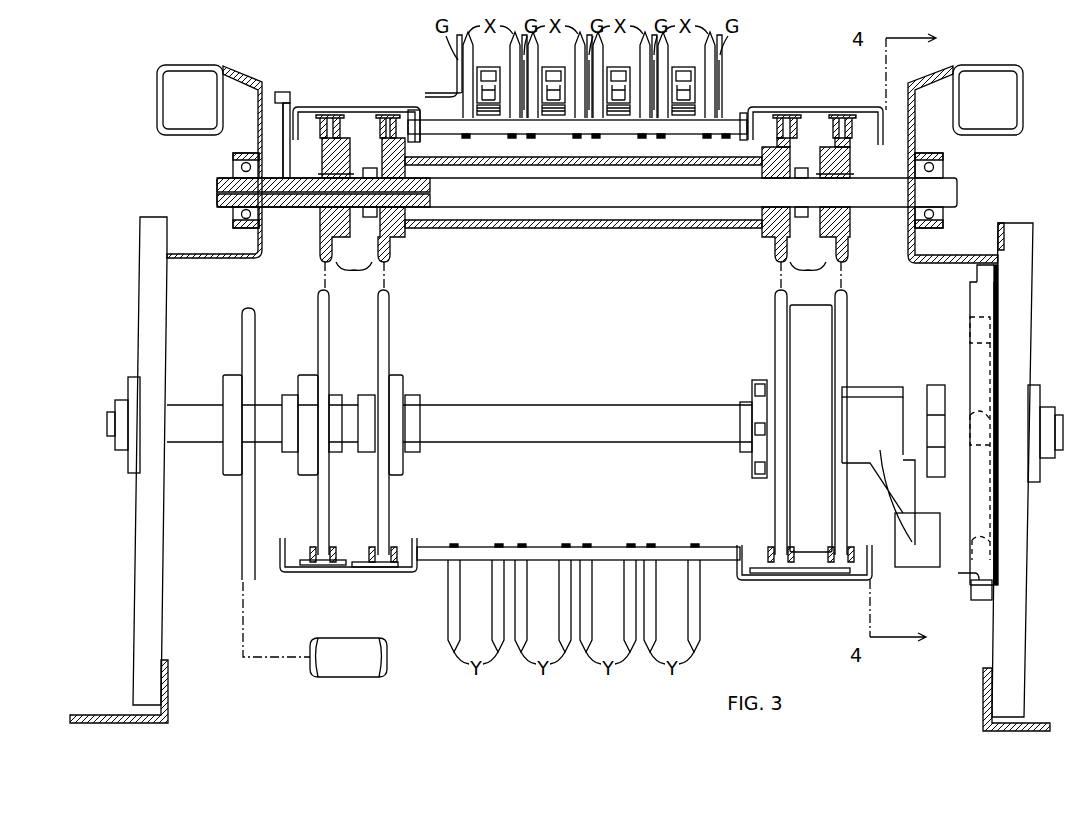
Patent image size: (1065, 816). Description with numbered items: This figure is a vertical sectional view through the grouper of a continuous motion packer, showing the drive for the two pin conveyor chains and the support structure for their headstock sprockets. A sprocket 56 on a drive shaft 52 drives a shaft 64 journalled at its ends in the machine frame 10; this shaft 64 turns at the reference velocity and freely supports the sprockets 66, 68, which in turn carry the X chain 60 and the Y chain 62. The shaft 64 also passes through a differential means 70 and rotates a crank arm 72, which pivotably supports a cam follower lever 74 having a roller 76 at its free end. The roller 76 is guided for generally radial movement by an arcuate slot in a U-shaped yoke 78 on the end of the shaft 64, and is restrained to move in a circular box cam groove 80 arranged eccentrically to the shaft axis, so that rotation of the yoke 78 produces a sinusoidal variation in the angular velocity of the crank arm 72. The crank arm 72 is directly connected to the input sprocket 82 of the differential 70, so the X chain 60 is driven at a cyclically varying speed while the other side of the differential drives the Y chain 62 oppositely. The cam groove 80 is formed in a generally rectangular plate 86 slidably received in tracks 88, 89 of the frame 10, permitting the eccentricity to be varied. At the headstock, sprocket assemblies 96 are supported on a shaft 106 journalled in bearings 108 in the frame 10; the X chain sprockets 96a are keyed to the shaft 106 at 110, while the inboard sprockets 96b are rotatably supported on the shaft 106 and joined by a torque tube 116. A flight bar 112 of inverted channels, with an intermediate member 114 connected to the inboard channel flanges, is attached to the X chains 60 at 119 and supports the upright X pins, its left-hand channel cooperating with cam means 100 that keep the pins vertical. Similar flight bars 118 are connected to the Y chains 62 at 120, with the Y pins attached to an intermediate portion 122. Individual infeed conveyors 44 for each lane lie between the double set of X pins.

The machine frame 10 is at (178, 137).
The infeed conveyor 44 is at (486, 67).
The drive shaft 52 is at (342, 640).
The sprocket 56 is at (250, 498).
The X chain 60 is at (320, 273).
The Y chain 62 is at (388, 273).
The shaft 64 is at (186, 405).
The sprocket 66 is at (318, 478).
The sprocket 68 is at (378, 478).
The differential means 70 is at (748, 364).
The crank arm 72 is at (869, 387).
The cam follower lever 74 is at (950, 487).
The roller 76 is at (988, 412).
The U-shaped yoke 78 is at (934, 385).
The box cam groove 80 is at (970, 331).
The input sprocket 82 is at (836, 312).
The rectangular plate 86 is at (970, 307).
The track 88 is at (977, 283).
The track 89 is at (968, 578).
The headstock sprocket assembly 96 is at (581, 275).
The X chain headstock sprocket 96a is at (320, 224).
The inboard sprocket 96b is at (405, 228).
The cam track element 100 is at (288, 104).
The shaft 106 is at (958, 191).
The bearing 108 is at (233, 160).
The key 110 is at (338, 174).
The flight bar 112 is at (382, 107).
The intermediate member 114 is at (611, 134).
The torque tube 116 is at (571, 228).
The flight bar 118 is at (338, 572).
The connection 119 is at (341, 124).
The connection 120 is at (398, 555).
The intermediate portion 122 is at (540, 547).